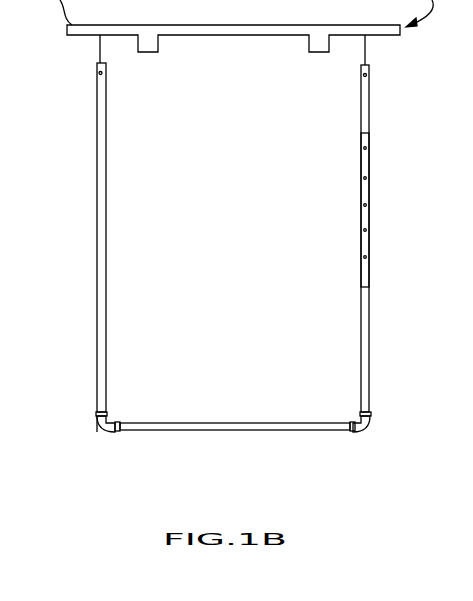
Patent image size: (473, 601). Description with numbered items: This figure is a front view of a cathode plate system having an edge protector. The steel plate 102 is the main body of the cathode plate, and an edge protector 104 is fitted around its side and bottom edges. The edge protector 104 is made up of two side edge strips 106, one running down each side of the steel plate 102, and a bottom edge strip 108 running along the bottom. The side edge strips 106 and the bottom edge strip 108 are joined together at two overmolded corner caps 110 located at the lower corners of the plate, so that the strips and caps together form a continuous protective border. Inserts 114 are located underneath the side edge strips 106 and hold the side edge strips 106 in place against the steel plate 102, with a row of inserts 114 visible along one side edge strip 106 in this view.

The steel plate 102 is at (368, 52).
The edge protector 104 is at (97, 153).
The side edge strips 106 is at (97, 268).
The bottom edge strip 108 is at (290, 430).
The overmolded corner caps 110 is at (104, 432).
The inserts 114 is at (365, 150).